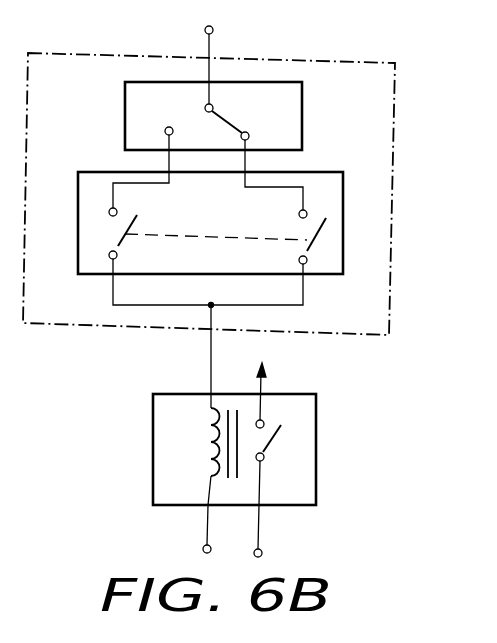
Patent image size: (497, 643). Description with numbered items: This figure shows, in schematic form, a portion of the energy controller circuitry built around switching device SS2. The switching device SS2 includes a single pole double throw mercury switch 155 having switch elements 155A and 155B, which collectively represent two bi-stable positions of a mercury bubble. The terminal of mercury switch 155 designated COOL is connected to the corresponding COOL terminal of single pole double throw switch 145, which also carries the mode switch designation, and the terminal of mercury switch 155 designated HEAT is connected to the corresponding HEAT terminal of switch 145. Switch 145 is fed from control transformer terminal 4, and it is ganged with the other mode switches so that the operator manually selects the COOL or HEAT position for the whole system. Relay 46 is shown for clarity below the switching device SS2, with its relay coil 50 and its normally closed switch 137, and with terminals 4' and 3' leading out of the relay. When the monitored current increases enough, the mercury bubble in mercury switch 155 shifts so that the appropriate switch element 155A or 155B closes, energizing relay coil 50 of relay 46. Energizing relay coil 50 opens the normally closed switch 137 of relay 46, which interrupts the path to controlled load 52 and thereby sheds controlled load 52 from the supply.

The switching device SS2 is at (112, 46).
The control transformer terminal 4 is at (218, 65).
The single pole double throw switch 145 is at (305, 94).
The single pole double throw mercury switch 155 is at (323, 172).
The switch element 155A is at (120, 242).
The switch element 155B is at (281, 244).
The relay 46 is at (146, 457).
The relay coil 50 is at (212, 434).
The normally closed switch 137 is at (264, 444).
The controlled load 52 is at (321, 383).
The terminal 4' is at (188, 533).
The terminal 3' is at (274, 533).